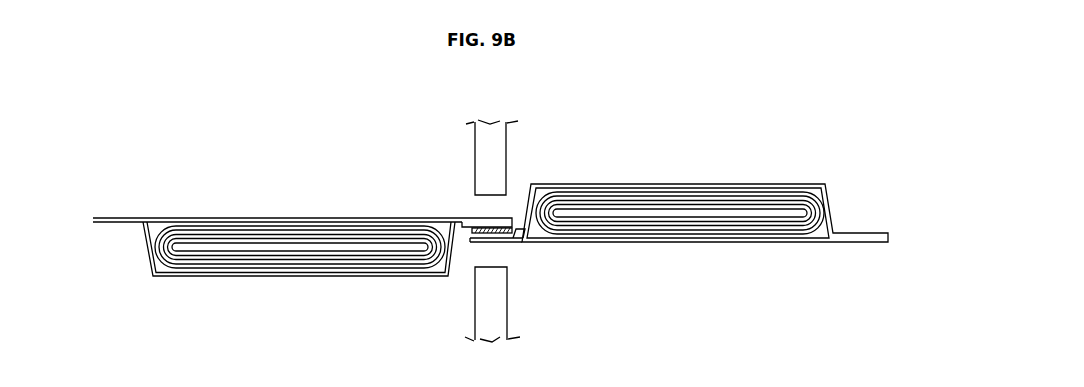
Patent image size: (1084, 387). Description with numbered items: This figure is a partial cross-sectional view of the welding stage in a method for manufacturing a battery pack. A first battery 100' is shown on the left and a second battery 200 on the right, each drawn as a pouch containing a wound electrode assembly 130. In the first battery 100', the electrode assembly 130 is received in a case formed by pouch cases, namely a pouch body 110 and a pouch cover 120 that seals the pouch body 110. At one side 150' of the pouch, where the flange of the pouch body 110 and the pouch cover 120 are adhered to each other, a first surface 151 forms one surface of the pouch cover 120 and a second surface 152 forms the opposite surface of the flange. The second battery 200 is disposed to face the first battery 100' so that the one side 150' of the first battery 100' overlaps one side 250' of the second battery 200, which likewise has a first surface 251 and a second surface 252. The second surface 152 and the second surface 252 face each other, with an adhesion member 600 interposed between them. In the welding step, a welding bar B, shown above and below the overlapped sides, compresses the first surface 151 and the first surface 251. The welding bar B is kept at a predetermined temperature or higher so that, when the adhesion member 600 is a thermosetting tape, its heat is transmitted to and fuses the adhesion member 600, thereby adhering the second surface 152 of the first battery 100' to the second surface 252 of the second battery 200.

The first battery 100' is at (302, 229).
The pouch body 110 is at (205, 279).
The pouch cover 120 is at (316, 222).
The electrode assembly 130 is at (250, 262).
The one side of the first battery 150' is at (302, 177).
The first surface 151 is at (487, 217).
The second surface 152 is at (412, 218).
The adhesion member 600 is at (476, 236).
The welding bar B is at (507, 143).
The second battery 200 is at (692, 174).
The one side of the second battery 250' is at (530, 276).
The first surface 251 is at (506, 244).
The second surface 252 is at (548, 224).